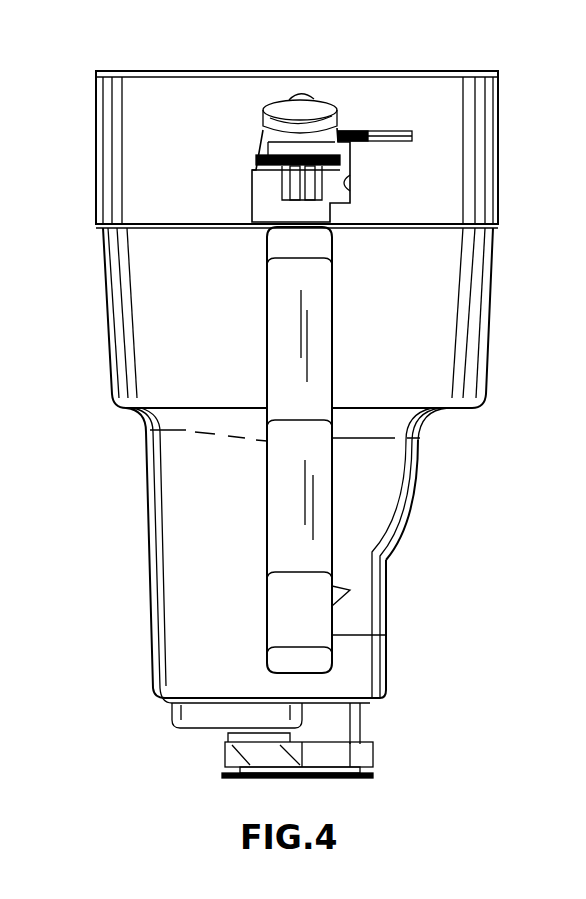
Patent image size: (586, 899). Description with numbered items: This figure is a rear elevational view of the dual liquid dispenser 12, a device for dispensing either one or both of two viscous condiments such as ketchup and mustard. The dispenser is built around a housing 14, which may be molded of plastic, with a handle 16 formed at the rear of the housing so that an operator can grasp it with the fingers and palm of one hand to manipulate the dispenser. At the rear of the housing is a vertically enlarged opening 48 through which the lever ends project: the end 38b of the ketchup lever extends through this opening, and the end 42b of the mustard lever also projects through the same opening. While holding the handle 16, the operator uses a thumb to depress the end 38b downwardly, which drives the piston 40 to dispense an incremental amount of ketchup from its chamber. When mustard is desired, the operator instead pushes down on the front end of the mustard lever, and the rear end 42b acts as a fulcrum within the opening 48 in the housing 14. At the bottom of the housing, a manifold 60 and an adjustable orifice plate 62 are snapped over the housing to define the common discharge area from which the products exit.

The dual liquid dispenser 12 is at (505, 122).
The housing 14 is at (455, 338).
The handle 16 is at (311, 500).
The end of ketchup lever 38b is at (395, 140).
The piston 40 is at (285, 195).
The end of mustard lever 42b is at (300, 108).
The vertically enlarged opening 48 is at (380, 193).
The manifold 60 is at (360, 757).
The adjustable orifice plate 62 is at (365, 778).